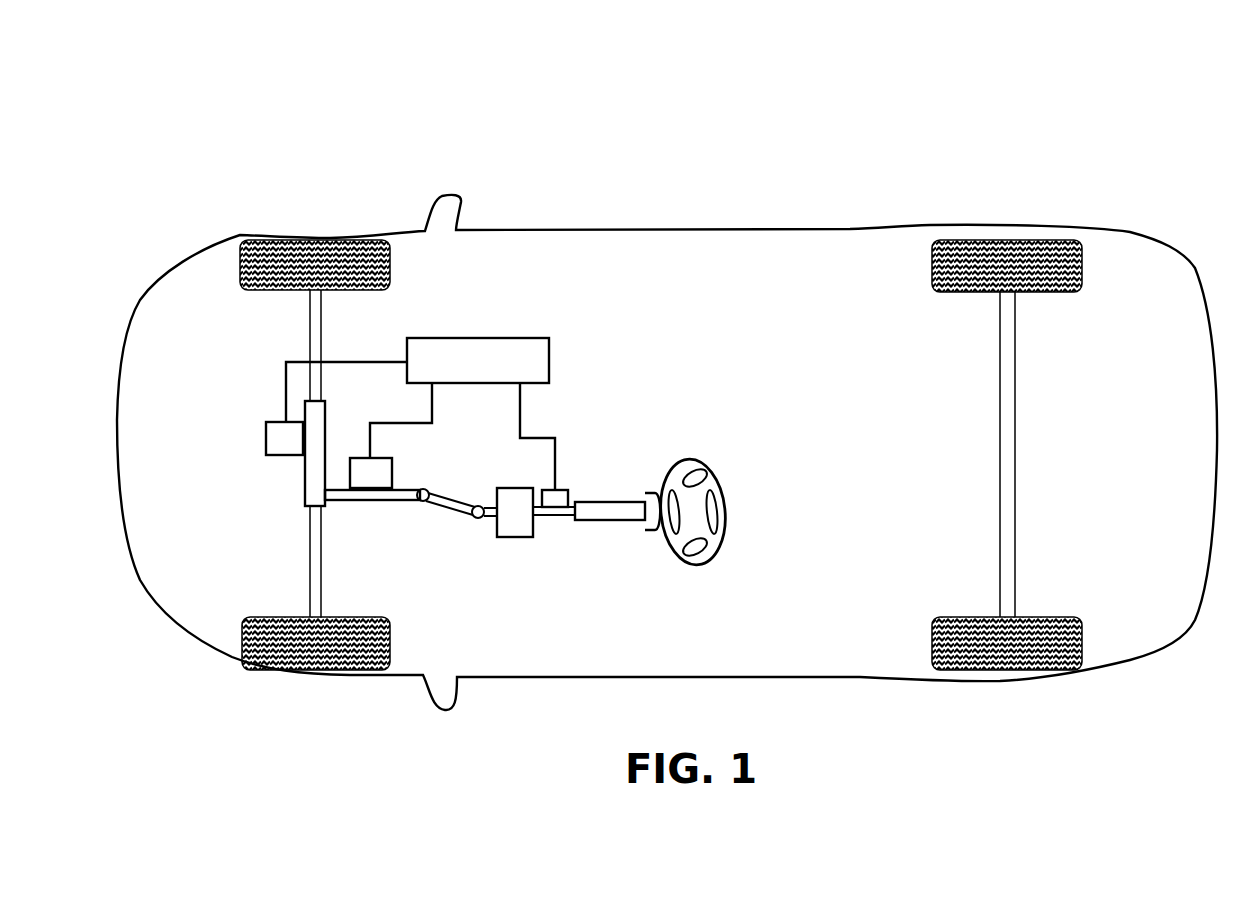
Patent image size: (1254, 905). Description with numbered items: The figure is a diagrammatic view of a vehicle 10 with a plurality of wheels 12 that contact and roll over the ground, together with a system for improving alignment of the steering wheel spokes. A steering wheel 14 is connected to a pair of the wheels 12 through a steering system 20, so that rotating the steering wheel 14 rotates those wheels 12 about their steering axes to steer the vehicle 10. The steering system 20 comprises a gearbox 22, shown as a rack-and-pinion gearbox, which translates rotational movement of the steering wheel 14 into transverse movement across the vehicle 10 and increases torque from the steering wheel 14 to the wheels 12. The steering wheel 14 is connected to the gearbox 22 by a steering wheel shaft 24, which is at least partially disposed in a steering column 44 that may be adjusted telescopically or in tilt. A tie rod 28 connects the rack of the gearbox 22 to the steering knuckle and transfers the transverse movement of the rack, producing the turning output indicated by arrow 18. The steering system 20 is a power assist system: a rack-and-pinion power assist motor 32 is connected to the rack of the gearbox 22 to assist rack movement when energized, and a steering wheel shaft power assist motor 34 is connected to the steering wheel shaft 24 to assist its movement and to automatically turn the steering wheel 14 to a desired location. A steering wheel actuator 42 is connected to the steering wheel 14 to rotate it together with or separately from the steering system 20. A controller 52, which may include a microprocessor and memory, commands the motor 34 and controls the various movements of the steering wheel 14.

The vehicle 10 is at (893, 153).
The wheels 12 is at (340, 240).
The steering wheel 14 is at (688, 460).
The arrow 18 is at (240, 690).
The steering system 20 is at (302, 453).
The gearbox 22 is at (305, 488).
The steering wheel shaft 24 is at (443, 490).
The tie rod 28 is at (308, 565).
The rack-and-pinion power assist motor 32 is at (277, 422).
The steering wheel shaft power assist motor 34 is at (355, 458).
The steering wheel actuator 42 is at (565, 490).
The steering column 44 is at (612, 522).
The controller 52 is at (477, 338).